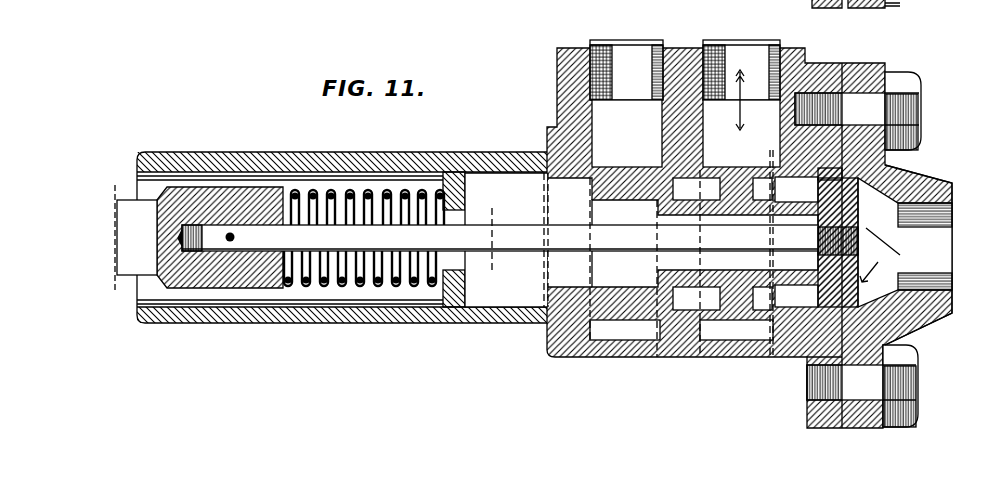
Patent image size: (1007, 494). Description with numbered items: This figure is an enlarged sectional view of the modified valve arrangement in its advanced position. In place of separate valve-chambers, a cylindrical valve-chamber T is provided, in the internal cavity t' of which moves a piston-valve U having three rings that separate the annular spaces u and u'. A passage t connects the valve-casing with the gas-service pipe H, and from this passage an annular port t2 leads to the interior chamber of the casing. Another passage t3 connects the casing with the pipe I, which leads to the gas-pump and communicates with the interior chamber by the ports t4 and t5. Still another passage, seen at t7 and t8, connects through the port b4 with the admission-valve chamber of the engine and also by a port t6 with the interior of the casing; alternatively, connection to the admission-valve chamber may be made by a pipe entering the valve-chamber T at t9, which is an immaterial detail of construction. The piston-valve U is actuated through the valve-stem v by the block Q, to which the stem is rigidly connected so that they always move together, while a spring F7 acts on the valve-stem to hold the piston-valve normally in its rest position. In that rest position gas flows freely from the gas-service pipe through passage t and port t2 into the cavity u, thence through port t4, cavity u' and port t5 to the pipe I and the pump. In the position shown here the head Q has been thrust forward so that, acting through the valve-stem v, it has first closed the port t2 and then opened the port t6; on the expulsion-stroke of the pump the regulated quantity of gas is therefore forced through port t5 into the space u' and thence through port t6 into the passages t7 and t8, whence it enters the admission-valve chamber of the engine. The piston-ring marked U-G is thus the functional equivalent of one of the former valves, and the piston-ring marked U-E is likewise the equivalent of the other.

The cylindrical valve-chamber T is at (558, 112).
The block Q is at (136, 237).
The spring F7 is at (384, 193).
The gas-service pipe H is at (618, 44).
The pipe I is at (747, 43).
The passage t is at (626, 210).
The internal cavity t' is at (506, 240).
The annular port t2 is at (653, 160).
The passage t3 is at (762, 150).
The port t4 is at (703, 166).
The port t5 is at (780, 192).
The port t6 is at (818, 308).
The passage t7 is at (886, 152).
The chamber t8 is at (838, 162).
The pipe connection t9 is at (910, 260).
The port b4 is at (880, 255).
The annular space u is at (696, 244).
The annular space u' is at (796, 177).
The piston-valve U is at (625, 212).
The piston-ring U-G is at (583, 198).
The piston-ring U-E is at (905, 336).
The valve-stem v is at (518, 237).